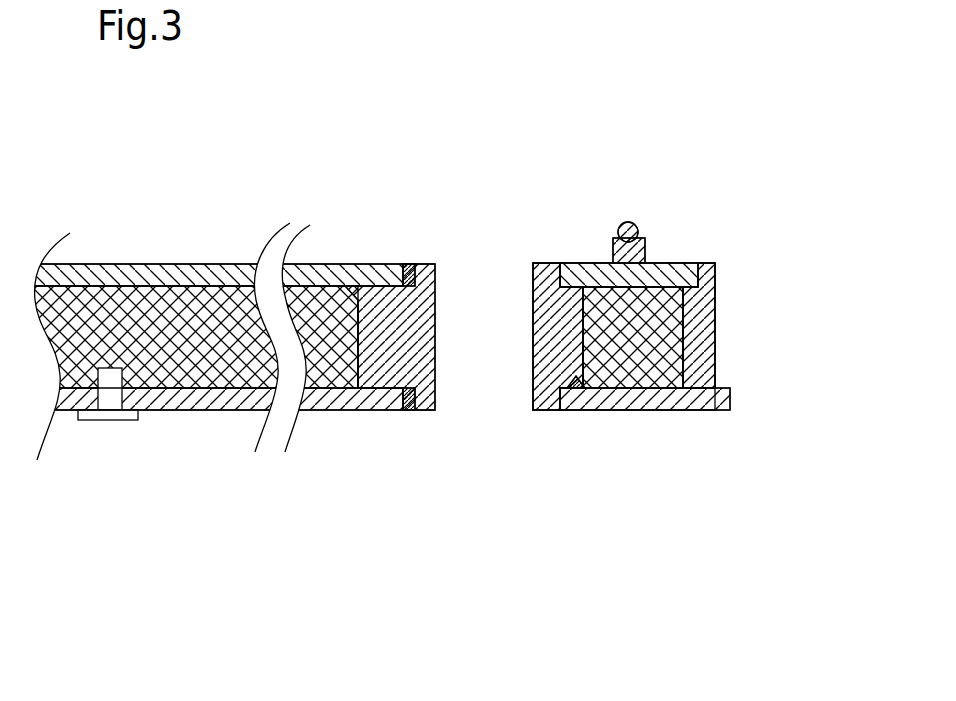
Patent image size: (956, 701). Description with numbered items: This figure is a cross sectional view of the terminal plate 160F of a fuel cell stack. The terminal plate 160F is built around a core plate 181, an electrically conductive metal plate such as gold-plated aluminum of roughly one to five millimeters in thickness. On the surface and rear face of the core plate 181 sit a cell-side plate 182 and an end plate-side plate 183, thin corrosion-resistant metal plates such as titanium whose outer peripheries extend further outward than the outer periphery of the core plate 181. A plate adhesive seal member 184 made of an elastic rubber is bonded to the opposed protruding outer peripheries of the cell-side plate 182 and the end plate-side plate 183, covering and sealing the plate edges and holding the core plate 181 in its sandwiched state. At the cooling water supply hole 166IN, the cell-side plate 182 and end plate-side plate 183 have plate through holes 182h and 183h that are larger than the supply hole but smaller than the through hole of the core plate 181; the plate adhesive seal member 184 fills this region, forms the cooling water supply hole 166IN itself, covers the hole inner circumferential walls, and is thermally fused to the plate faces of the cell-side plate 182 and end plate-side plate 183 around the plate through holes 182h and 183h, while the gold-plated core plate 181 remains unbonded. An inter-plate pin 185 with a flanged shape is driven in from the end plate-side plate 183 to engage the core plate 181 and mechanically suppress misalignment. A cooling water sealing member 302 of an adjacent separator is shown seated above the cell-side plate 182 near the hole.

The terminal plate 160F is at (118, 126).
The core plate 181 is at (217, 370).
The cell-side plate 182 is at (158, 267).
The end plate-side plate 183 is at (182, 412).
The plate adhesive seal member 184 is at (437, 382).
The inter-plate pin 185 is at (103, 420).
The plate through hole 182h is at (412, 262).
The plate through hole 183h is at (420, 412).
The cooling water sealing member 302 is at (613, 240).
The cooling water supply hole 166IN is at (518, 327).